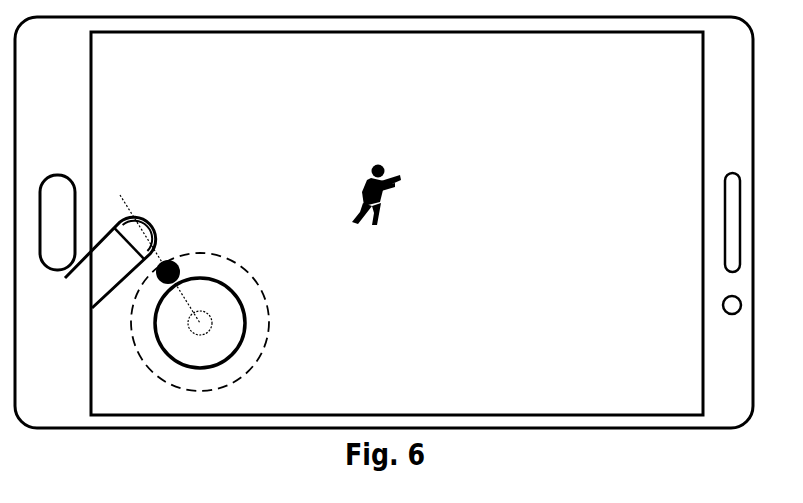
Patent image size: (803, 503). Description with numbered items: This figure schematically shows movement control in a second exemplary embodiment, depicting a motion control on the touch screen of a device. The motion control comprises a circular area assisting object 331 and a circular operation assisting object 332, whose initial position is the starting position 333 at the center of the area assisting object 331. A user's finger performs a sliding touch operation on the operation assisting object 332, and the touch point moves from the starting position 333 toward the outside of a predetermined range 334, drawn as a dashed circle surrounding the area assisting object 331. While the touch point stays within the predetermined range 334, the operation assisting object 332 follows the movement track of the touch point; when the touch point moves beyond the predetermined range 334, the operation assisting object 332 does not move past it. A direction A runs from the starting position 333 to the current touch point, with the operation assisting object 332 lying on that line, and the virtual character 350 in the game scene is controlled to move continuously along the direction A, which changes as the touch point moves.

The direction A is at (118, 206).
The area assisting object 331 is at (247, 322).
The operation assisting object 332 is at (180, 268).
The starting position 333 is at (210, 314).
The predetermined range 334 is at (250, 372).
The virtual character 350 is at (395, 186).